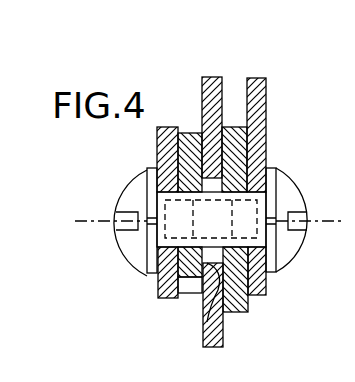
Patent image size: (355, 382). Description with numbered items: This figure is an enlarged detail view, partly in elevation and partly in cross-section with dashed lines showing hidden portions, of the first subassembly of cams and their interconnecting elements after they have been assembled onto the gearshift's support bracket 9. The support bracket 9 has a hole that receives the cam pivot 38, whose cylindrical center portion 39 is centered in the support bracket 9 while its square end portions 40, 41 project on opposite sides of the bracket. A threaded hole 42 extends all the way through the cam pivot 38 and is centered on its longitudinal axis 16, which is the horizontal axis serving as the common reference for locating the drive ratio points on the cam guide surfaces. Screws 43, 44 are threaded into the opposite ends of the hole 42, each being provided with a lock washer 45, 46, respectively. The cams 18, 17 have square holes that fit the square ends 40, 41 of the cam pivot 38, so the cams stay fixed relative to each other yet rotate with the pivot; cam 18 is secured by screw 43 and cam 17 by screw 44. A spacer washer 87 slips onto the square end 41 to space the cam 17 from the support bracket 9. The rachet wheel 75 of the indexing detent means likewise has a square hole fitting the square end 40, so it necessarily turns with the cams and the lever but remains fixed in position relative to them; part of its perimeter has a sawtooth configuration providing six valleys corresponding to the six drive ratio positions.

The rachet wheel 75 is at (188, 132).
The cam 17 is at (268, 89).
The lock washer 46 is at (273, 168).
The threaded hole 42 is at (279, 192).
The screw 44 is at (270, 205).
The lock washer 45 is at (147, 170).
The screw 43 is at (128, 194).
The longitudinal axis 16 is at (105, 222).
The cam pivot 38 is at (262, 228).
The cam 18 is at (158, 288).
The square end portion 40 is at (170, 298).
The cylindrical center portion 39 is at (200, 328).
The support bracket 9 is at (225, 333).
The spacer washer 87 is at (249, 316).
The square end portion 41 is at (256, 300).